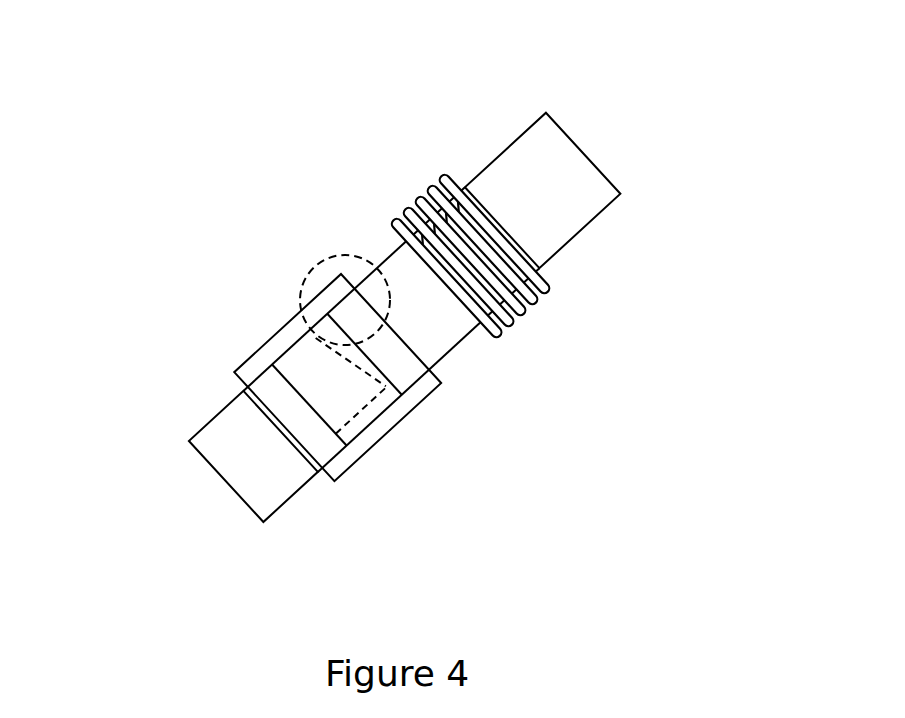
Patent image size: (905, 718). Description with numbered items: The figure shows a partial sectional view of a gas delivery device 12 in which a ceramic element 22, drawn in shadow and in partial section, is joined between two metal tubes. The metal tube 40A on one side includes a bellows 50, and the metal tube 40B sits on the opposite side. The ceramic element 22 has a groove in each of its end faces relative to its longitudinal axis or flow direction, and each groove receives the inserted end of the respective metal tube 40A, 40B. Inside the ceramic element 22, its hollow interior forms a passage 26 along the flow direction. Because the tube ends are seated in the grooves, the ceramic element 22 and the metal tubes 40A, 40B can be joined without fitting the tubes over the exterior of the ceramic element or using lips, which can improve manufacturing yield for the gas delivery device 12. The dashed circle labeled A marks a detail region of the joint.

The gas delivery device 12 is at (212, 153).
The metal tube 40A is at (478, 118).
The metal tube 40B is at (157, 437).
The ceramic element 22 is at (290, 350).
The passage 26 is at (355, 388).
The bellows 50 is at (577, 303).
The detail region A is at (324, 258).